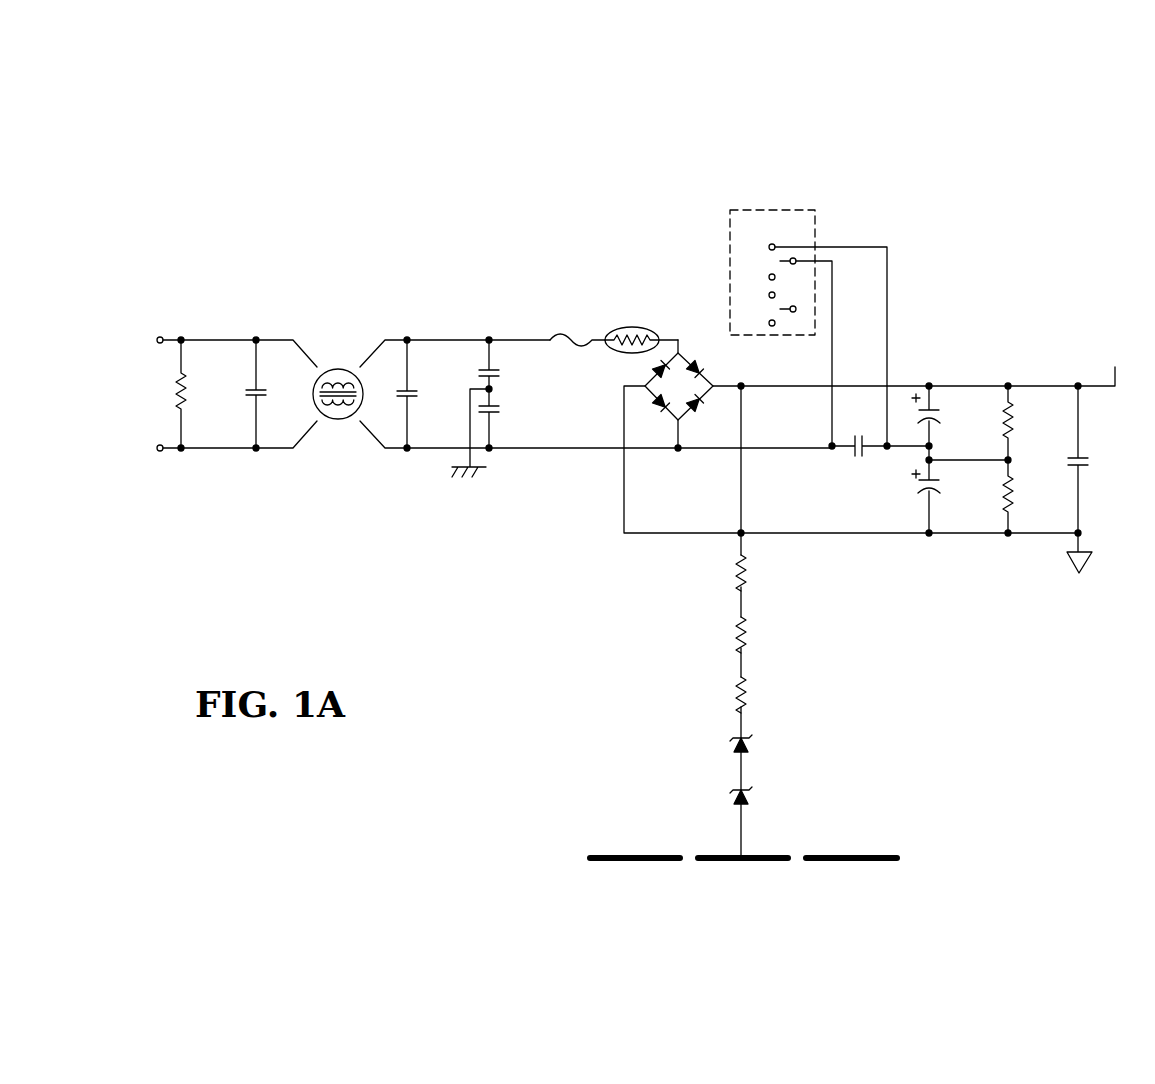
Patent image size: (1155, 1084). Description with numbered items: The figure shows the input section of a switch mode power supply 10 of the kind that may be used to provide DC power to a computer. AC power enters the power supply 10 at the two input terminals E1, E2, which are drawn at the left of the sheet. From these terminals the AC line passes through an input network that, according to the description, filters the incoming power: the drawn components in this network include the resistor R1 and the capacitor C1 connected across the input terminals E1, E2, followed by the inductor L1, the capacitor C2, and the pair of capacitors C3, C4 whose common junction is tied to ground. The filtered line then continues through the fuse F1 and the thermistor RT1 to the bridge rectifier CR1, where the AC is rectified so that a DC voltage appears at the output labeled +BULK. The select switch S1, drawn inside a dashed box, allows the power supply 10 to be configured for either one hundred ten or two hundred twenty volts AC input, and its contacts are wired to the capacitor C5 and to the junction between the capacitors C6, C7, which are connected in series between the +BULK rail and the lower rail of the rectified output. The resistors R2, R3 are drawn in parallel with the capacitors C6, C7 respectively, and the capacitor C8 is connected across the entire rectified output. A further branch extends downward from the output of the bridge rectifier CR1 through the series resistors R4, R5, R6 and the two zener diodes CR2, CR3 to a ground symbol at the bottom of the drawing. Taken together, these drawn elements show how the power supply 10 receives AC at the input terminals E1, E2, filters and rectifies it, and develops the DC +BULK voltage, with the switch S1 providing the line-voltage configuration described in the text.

The switch mode power supply 10 is at (142, 233).
The input terminal E1 is at (155, 342).
The input terminal E2 is at (155, 452).
The resistor R1 is at (204, 394).
The capacitor C1 is at (274, 394).
The inductor L1 is at (338, 381).
The capacitor C2 is at (425, 394).
The capacitor C3 is at (538, 363).
The capacitor C4 is at (538, 418).
The fuse F1 is at (577, 307).
The thermistor RT1 is at (641, 319).
The bridge rectifier CR1 is at (679, 386).
The switch S1 is at (772, 251).
The capacitor C5 is at (880, 473).
The capacitor C6 is at (947, 423).
The capacitor C7 is at (947, 498).
The resistor R2 is at (1028, 423).
The resistor R3 is at (1028, 498).
The capacitor C8 is at (1094, 459).
The resistor R4 is at (778, 572).
The resistor R5 is at (778, 634).
The resistor R6 is at (778, 694).
The zener diode CR2 is at (761, 749).
The zener diode CR3 is at (761, 799).